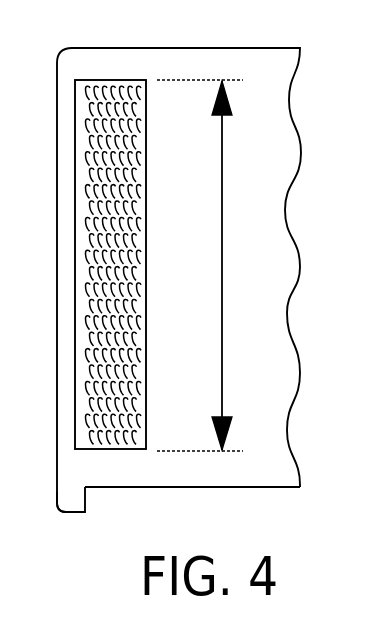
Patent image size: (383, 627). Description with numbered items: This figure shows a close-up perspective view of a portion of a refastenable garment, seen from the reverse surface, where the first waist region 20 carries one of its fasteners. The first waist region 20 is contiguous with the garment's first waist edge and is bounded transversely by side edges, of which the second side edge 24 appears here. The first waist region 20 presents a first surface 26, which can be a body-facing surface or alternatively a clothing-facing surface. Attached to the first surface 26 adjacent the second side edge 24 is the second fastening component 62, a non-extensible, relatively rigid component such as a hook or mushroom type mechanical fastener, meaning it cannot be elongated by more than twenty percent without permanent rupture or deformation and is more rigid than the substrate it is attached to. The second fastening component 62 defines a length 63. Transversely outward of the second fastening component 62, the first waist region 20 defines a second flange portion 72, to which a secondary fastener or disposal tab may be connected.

The first waist region 20 is at (237, 65).
The second side edge 24 is at (86, 497).
The first surface 26 is at (180, 460).
The second fastening component 62 is at (146, 244).
The length 63 is at (221, 340).
The second flange portion 72 is at (70, 498).